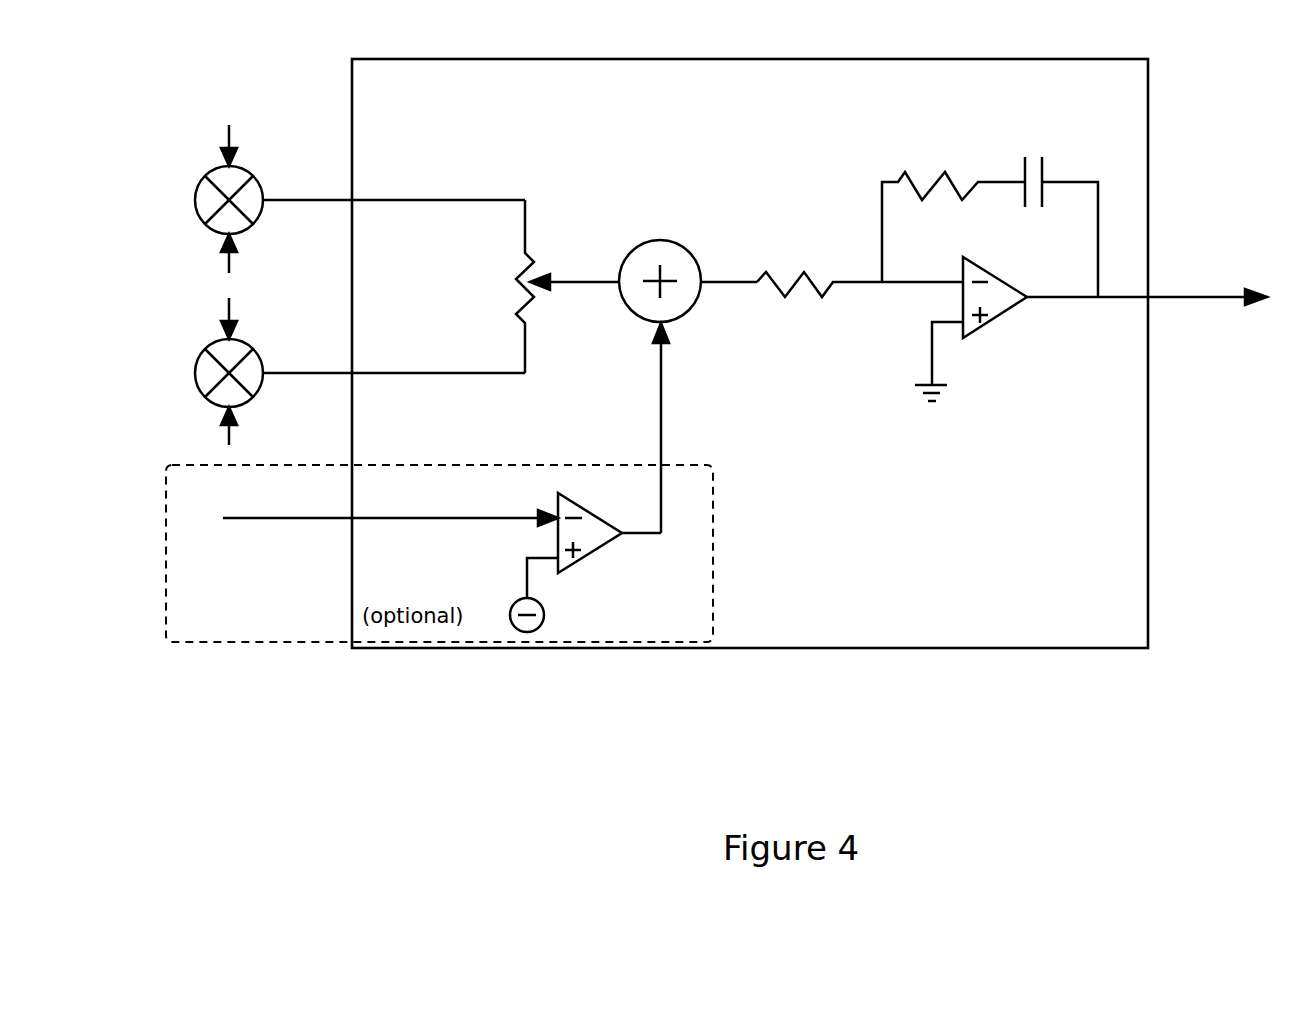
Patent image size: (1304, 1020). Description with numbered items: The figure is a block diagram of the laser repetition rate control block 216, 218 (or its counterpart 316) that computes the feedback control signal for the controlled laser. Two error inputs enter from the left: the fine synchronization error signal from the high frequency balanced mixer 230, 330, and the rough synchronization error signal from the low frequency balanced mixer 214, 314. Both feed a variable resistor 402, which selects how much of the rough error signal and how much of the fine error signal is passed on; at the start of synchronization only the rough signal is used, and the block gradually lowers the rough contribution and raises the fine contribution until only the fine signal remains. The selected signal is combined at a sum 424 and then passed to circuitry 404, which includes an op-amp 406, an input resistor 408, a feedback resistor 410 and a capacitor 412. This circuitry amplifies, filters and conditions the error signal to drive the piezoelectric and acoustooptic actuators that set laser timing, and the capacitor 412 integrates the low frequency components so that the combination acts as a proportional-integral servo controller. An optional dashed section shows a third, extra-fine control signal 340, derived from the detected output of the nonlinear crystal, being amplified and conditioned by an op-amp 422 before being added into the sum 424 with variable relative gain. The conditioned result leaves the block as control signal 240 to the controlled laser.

The control signal generator block 216 is at (750, 353).
The control signal generator block 218 is at (750, 353).
The control signal generator block 316 is at (686, 112).
The balanced mixer 230 is at (360, 199).
The balanced mixer 330 is at (360, 199).
The balanced mixer 214 is at (360, 371).
The balanced mixer 314 is at (360, 371).
The control signal 340 is at (390, 522).
The variable resistor 402 is at (541, 286).
The circuitry 404 is at (848, 211).
The op-amp 406 is at (983, 329).
The resistor 408 is at (860, 310).
The resistor 410 is at (953, 211).
The capacitor 412 is at (1059, 213).
The op-amp 422 is at (585, 556).
The sum 424 is at (688, 370).
The control signal 240 is at (1147, 287).